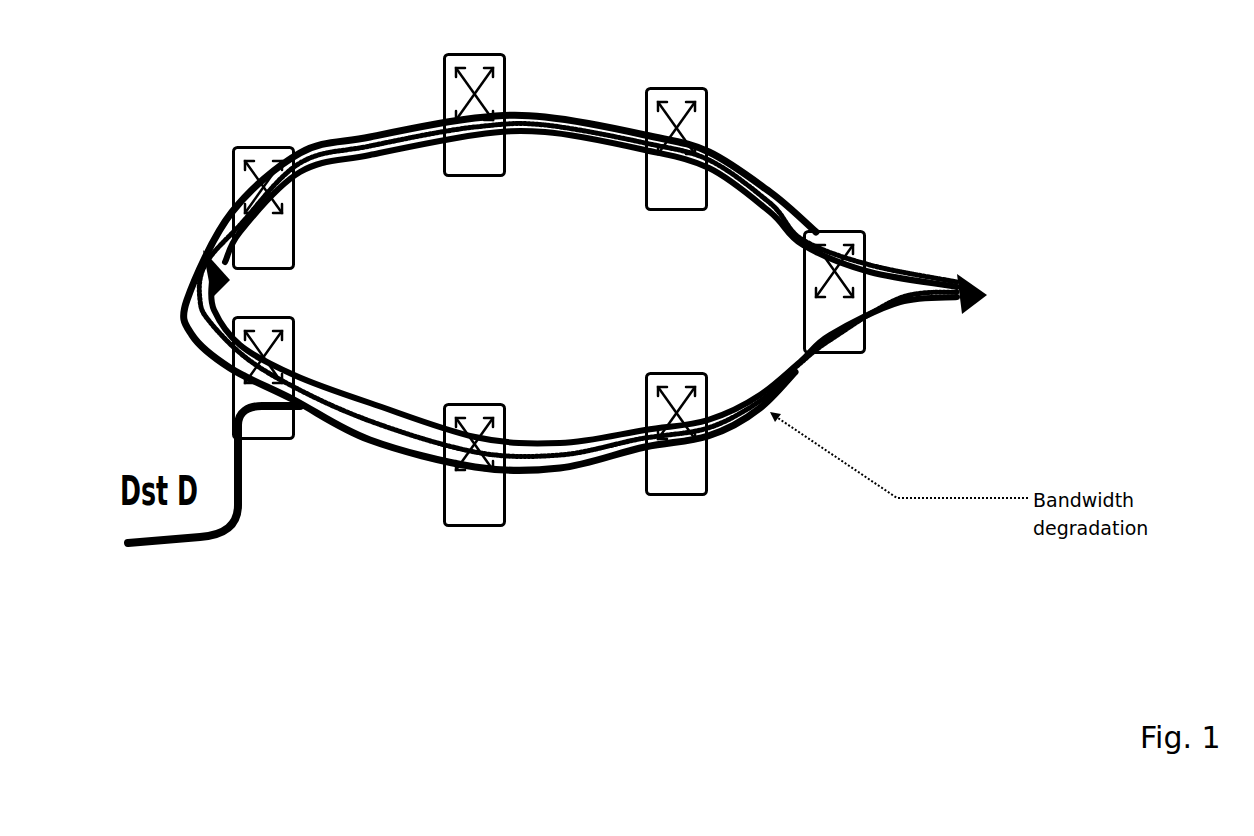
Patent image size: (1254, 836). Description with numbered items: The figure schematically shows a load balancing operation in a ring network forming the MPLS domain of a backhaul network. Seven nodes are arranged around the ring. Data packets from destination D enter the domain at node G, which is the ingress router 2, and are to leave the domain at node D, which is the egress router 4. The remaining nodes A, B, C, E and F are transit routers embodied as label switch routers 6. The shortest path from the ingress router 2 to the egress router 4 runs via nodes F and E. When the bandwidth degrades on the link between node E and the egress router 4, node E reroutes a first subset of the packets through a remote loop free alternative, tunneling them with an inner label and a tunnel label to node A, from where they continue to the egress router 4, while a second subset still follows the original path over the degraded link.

The ingress router 2 is at (230, 420).
The egress router 4 is at (852, 224).
The label switch routers 6 is at (240, 146).